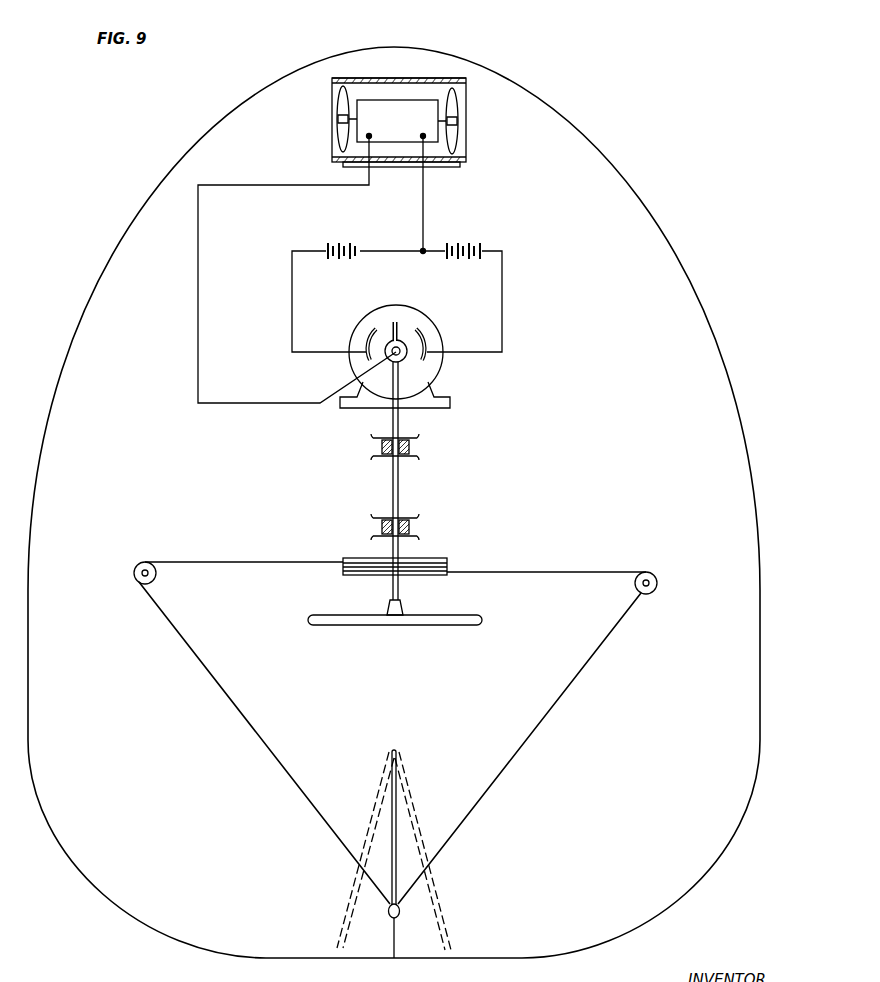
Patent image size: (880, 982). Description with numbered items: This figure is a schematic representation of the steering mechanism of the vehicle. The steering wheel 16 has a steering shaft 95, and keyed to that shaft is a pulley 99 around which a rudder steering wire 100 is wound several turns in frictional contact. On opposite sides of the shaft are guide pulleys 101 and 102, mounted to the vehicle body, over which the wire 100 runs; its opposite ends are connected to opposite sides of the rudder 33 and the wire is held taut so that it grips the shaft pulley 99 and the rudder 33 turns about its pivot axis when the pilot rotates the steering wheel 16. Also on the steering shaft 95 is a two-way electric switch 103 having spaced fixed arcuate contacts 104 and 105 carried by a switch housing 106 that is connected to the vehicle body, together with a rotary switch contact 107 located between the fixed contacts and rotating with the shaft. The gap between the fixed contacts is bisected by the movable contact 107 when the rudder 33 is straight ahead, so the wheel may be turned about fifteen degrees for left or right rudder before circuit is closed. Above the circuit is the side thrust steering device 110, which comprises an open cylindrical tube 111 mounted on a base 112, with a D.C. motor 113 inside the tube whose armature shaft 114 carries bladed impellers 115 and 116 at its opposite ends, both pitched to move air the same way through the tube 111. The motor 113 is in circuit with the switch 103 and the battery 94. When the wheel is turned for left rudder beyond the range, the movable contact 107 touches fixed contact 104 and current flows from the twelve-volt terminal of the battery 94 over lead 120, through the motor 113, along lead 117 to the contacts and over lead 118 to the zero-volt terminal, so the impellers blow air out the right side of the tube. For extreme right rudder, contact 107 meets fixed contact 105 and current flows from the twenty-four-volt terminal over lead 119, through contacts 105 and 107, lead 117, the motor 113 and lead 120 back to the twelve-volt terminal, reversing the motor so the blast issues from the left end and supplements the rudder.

The side thrust steering device 110 is at (364, 76).
The open cylindrical tube 111 is at (445, 80).
The base 112 is at (458, 166).
The D.C. motor 113 is at (388, 104).
The armature shaft 114 is at (443, 113).
The bladed impeller 115 is at (455, 146).
The bladed impeller 116 is at (343, 97).
The lead 117 is at (198, 266).
The lead 118 is at (502, 305).
The lead 119 is at (292, 292).
The lead 120 is at (425, 198).
The battery 94 is at (479, 236).
The two-way electric switch 103 is at (428, 343).
The arcuate contact 104 is at (428, 339).
The arcuate contact 105 is at (367, 339).
The switch housing 106 is at (440, 347).
The rotary switch contact 107 is at (401, 319).
The steering shaft 95 is at (400, 487).
The pulley 99 is at (437, 558).
The steering wheel 16 is at (428, 628).
The guide pulley 101 is at (146, 562).
The guide pulley 102 is at (649, 574).
The rudder steering wire 100 is at (533, 741).
The rudder 33 is at (395, 874).